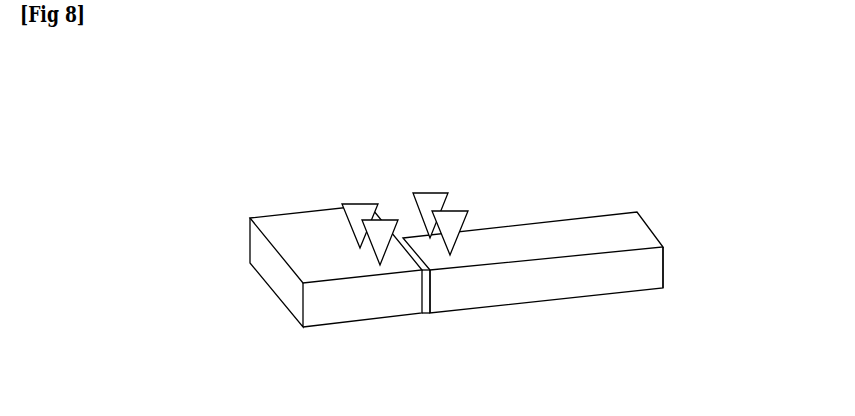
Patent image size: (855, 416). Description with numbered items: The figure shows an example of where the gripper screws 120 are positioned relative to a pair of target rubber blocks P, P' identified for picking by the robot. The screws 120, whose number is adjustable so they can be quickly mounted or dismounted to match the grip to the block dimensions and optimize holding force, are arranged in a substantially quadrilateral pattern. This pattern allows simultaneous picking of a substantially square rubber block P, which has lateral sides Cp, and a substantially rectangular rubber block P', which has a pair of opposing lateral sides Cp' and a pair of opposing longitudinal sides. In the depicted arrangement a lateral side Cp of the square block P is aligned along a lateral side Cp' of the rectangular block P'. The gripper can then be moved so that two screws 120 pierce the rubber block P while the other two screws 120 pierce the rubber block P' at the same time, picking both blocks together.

The screws 120 is at (376, 218).
The substantially square rubber block P is at (336, 212).
The substantially rectangular rubber block P' is at (533, 206).
The lateral sides of rubber block P Cp is at (321, 297).
The lateral sides of rubber block P' Cp' is at (595, 303).